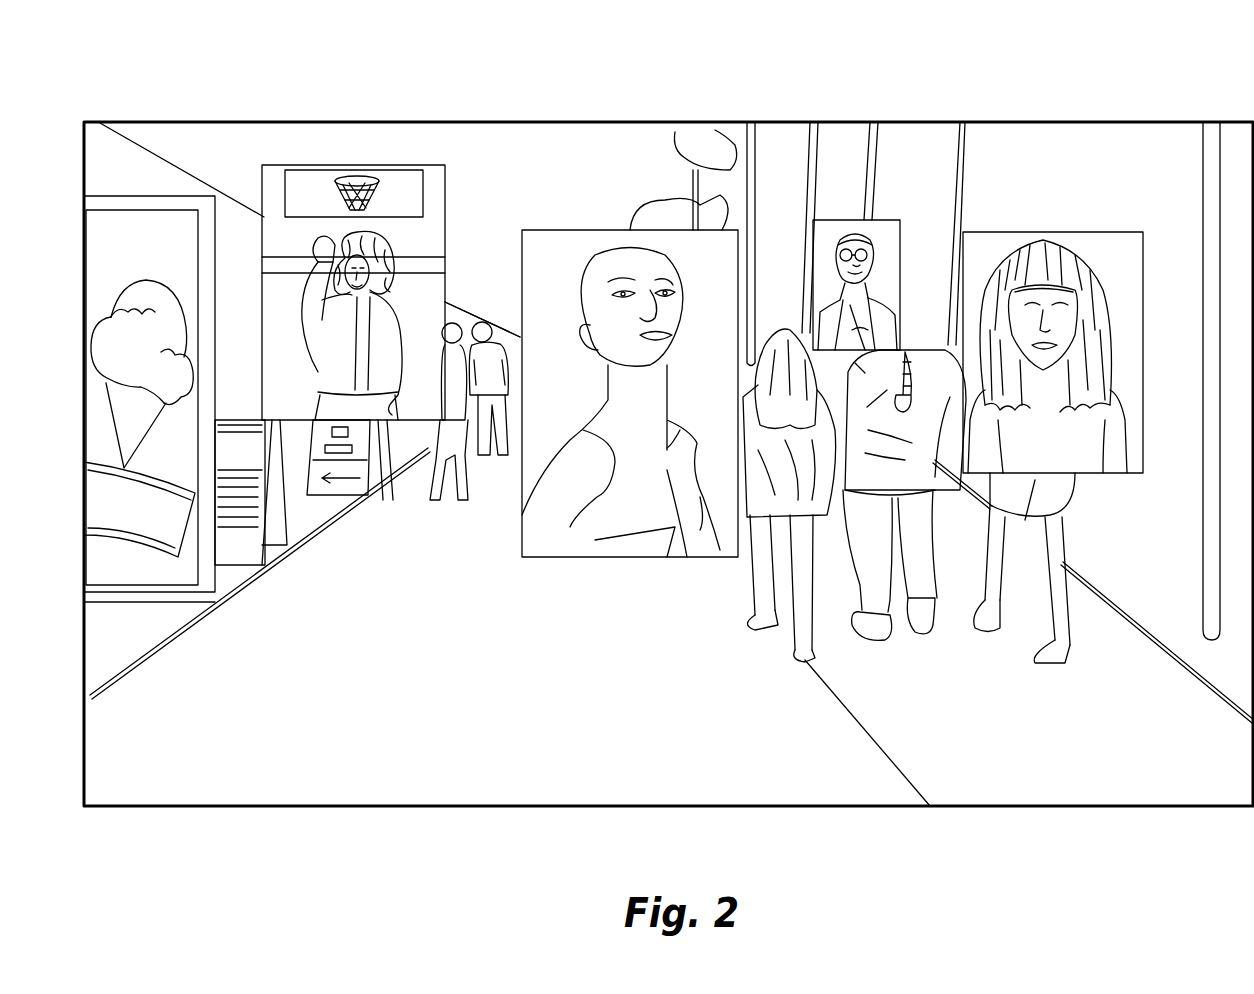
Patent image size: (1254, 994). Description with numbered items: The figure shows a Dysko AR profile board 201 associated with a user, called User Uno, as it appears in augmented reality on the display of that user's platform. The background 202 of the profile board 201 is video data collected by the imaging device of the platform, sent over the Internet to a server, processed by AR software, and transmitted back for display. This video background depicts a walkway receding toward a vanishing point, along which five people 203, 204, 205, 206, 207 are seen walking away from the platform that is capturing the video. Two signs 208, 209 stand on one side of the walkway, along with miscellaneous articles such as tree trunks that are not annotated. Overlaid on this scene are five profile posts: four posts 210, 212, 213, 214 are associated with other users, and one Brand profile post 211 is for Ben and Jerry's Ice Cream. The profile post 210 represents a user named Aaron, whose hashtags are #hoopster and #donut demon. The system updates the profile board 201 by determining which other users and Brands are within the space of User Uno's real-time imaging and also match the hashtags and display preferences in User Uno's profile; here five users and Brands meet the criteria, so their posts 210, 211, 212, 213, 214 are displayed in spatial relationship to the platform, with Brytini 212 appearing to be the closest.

The Dysko AR profile board 201 is at (790, 118).
The background 202 is at (410, 658).
The person 203 is at (460, 457).
The person 204 is at (484, 312).
The person 205 is at (760, 553).
The person 206 is at (868, 558).
The person 207 is at (1050, 588).
The sign 208 is at (287, 515).
The sign 209 is at (353, 468).
The profile post 210 is at (330, 163).
The Brand profile post 211 is at (128, 190).
The profile post 212 is at (568, 557).
The profile post 213 is at (875, 220).
The profile post 214 is at (1058, 232).